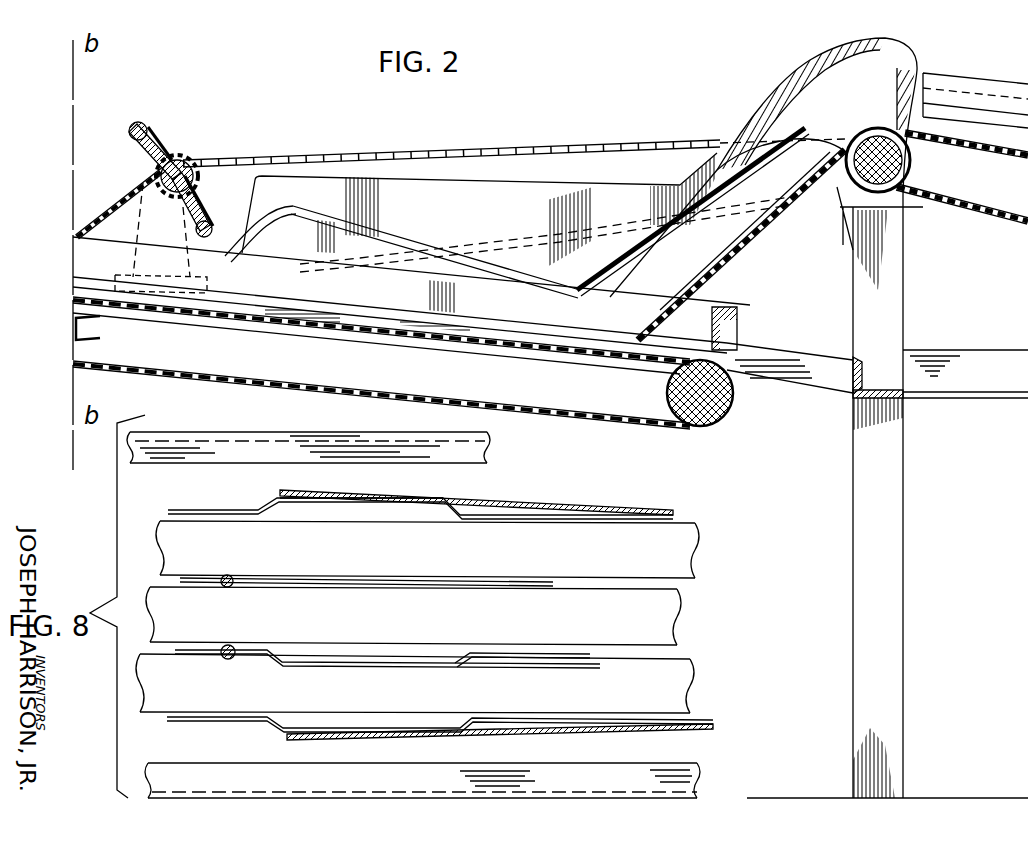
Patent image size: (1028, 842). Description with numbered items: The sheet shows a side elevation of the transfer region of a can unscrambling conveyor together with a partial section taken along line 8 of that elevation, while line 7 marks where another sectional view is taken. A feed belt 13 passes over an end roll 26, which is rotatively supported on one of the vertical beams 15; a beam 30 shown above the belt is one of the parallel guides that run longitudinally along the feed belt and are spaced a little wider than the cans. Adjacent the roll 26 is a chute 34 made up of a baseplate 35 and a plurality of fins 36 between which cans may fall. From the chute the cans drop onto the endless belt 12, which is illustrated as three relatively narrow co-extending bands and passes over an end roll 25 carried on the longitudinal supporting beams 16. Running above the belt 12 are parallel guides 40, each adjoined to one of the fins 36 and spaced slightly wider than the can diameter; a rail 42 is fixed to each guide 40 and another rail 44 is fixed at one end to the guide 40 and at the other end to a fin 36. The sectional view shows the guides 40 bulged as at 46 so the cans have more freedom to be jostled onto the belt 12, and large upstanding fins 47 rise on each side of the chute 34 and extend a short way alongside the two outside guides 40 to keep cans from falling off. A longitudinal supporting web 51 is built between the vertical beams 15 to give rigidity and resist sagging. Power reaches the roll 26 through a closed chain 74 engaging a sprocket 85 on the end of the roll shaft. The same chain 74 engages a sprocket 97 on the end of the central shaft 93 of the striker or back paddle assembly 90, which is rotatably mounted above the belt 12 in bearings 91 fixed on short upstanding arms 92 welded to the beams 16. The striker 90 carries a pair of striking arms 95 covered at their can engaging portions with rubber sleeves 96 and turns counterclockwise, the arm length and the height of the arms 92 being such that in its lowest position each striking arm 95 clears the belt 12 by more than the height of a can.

In FIG. 2, the section line 7— 7 is at (593, 108).
In FIG. 2, the section line 8— 8 is at (223, 234).
In FIG. 2, the endless belt 12 is at (358, 332).
In FIG. 8, the endless belt 12 is at (690, 553).
In FIG. 2, the feed belt 13 is at (967, 210).
In FIG. 2, the vertical beam 15 is at (903, 553).
In FIG. 2, the longitudinal supporting beam 16 is at (727, 308).
In FIG. 8, the longitudinal supporting beam 16 is at (487, 462).
In FIG. 2, the end roll 25 is at (668, 393).
In FIG. 2, the end roll 26 is at (906, 163).
In FIG. 2, the parallel guide 30 is at (957, 100).
In FIG. 2, the chute 34 is at (757, 245).
In FIG. 2, the baseplate 35 is at (727, 270).
In FIG. 2, the fin 36 is at (737, 237).
In FIG. 2, the parallel guide 40 is at (137, 262).
In FIG. 8, the parallel guide 40 is at (205, 510).
In FIG. 2, the rail 42 is at (388, 235).
In FIG. 8, the rail 42 is at (233, 588).
In FIG. 2, the rail 44 is at (622, 263).
In FIG. 2, the bulge 46 is at (275, 270).
In FIG. 8, the bulge 46 is at (310, 503).
In FIG. 2, the upstanding fin 47 is at (523, 187).
In FIG. 8, the upstanding fin 47 is at (560, 502).
In FIG. 2, the longitudinal supporting web 51 is at (977, 153).
In FIG. 2, the closed chain 74 is at (410, 153).
In FIG. 2, the sprocket 85 is at (862, 135).
In FIG. 2, the striker or back paddle assembly 90 is at (161, 183).
In FIG. 2, the bearing 91 is at (198, 183).
In FIG. 2, the upstanding arm 92 is at (147, 206).
In FIG. 2, the central shaft 93 is at (173, 197).
In FIG. 2, the striking arm 95 is at (148, 155).
In FIG. 2, the rubber sleeve 96 is at (129, 128).
In FIG. 2, the sprocket 97 is at (188, 163).